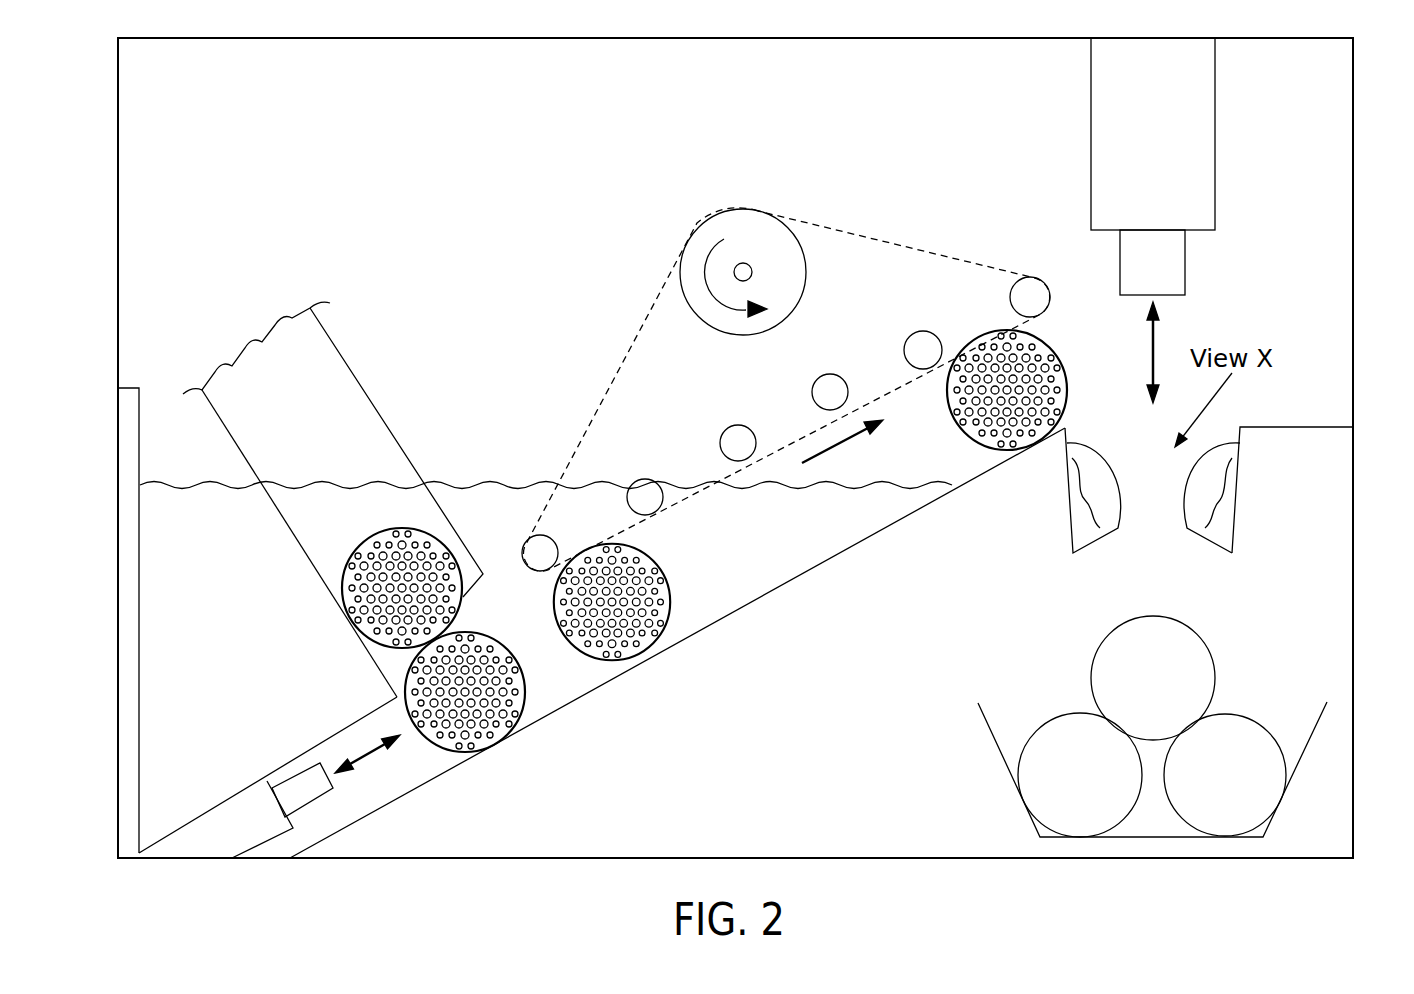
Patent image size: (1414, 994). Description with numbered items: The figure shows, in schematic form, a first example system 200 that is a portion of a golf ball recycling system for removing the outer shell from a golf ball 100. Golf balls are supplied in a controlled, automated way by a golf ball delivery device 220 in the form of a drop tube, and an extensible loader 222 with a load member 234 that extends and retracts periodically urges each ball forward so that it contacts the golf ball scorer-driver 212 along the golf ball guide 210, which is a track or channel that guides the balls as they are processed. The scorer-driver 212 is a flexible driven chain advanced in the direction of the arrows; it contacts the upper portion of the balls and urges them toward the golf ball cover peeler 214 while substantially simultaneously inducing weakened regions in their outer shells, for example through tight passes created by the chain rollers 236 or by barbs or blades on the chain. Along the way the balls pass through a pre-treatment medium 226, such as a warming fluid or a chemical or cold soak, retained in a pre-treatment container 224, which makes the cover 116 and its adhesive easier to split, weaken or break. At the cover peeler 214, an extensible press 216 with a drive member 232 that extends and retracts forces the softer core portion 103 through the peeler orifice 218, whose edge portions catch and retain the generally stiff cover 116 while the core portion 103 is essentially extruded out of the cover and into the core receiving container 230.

The golf ball 100 is at (352, 590).
The core portion 103 is at (1165, 640).
The cover 116 is at (1210, 488).
The first example system 200 is at (906, 201).
The golf ball guide 210 is at (813, 560).
The golf ball scorer-driver 212 is at (652, 292).
The golf ball cover peeler 214 is at (1232, 441).
The press 216 is at (1250, 184).
The peeler orifice 218 is at (1140, 530).
The golf ball delivery device 220 is at (345, 383).
The loader 222 is at (208, 772).
The pre-treatment container 224 is at (130, 600).
The pre-treatment medium 226 is at (197, 515).
The core receiving container 230 is at (990, 738).
The drive member 232 is at (1178, 270).
The load member 234 is at (292, 786).
The chain rollers 236 is at (828, 382).